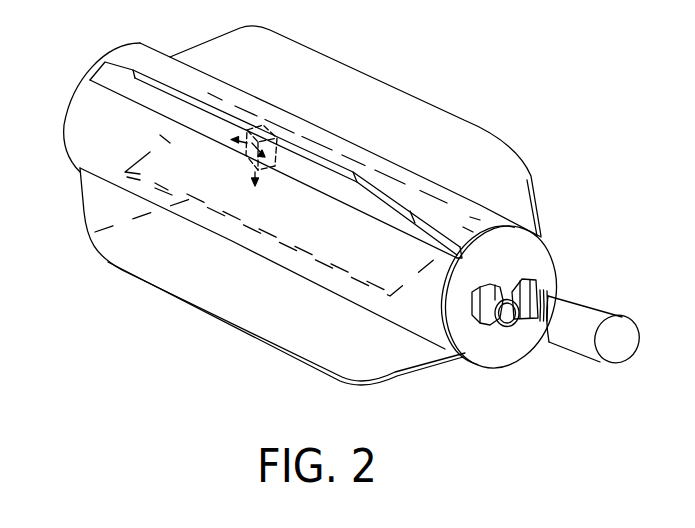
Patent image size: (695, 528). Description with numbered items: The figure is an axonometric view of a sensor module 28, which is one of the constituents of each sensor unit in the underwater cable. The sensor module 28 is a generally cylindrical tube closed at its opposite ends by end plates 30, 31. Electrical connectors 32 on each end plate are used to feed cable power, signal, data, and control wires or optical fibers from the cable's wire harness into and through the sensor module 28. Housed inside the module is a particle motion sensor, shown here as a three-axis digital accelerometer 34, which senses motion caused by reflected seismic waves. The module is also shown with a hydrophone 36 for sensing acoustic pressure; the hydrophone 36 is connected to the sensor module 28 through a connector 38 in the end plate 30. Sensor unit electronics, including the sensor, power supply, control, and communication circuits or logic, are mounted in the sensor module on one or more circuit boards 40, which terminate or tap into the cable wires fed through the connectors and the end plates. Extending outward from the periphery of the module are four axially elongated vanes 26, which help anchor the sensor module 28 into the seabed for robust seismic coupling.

The axially elongated vane 26 is at (200, 304).
The sensor module 28 is at (502, 67).
The end plate 30 is at (539, 244).
The end plate 31 is at (73, 90).
The electrical connector 32 is at (490, 312).
The three-axis digital accelerometer 34 is at (230, 166).
The hydrophone 36 is at (598, 308).
The connector 38 is at (530, 318).
The circuit board 40 is at (84, 235).